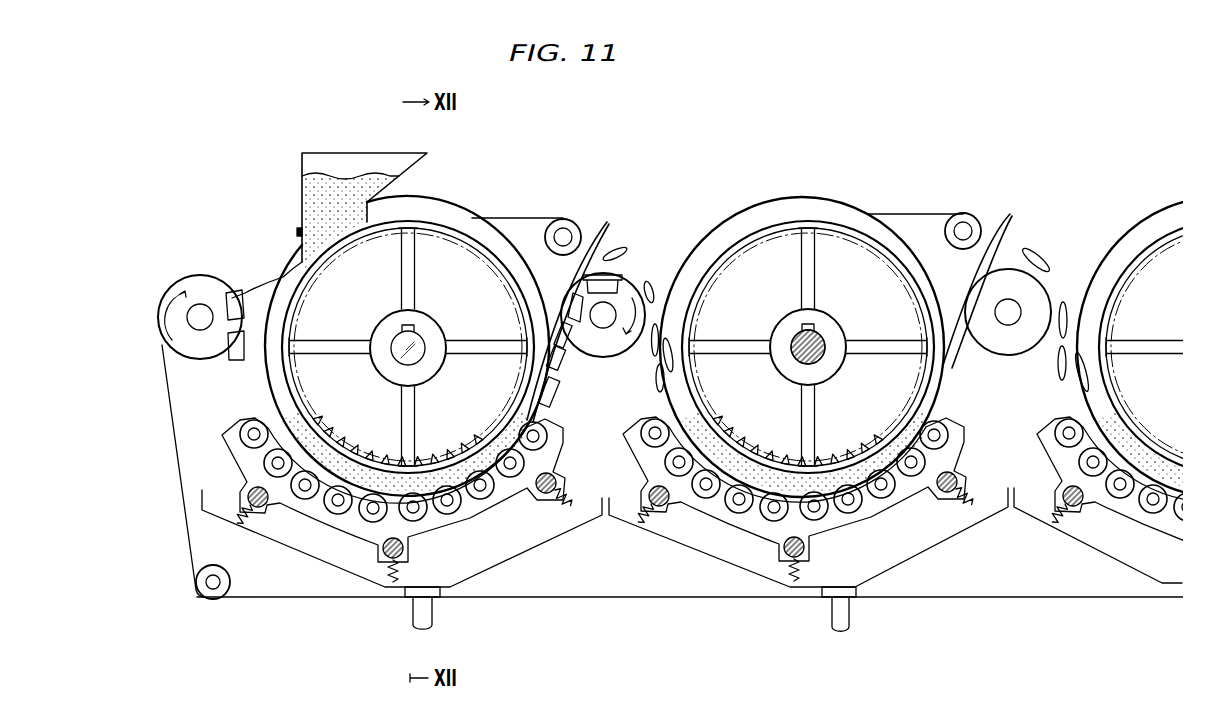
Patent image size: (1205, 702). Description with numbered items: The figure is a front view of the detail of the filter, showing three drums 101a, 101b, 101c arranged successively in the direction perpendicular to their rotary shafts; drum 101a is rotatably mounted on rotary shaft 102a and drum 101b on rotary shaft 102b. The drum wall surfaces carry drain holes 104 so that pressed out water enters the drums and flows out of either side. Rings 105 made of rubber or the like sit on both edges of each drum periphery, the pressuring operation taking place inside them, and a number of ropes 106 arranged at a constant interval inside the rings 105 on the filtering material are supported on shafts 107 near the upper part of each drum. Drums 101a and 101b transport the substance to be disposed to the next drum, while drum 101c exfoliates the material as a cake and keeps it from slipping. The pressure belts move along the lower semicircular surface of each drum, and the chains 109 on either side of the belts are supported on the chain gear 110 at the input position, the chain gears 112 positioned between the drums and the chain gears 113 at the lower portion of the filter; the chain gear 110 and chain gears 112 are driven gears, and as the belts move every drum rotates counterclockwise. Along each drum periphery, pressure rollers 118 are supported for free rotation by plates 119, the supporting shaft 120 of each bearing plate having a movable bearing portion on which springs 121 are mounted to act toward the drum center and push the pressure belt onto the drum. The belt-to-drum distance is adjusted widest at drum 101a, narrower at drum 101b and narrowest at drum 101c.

The drum 101a is at (462, 228).
The drum 101b is at (840, 222).
The drum 101c is at (1140, 245).
The rotary shaft 102a is at (392, 363).
The rotary shaft 102b is at (803, 357).
The drain holes 104 is at (449, 461).
The rings 105 is at (489, 228).
The ropes 106 is at (522, 217).
The shafts 107 is at (567, 220).
The chains 109 is at (595, 598).
The chain gear 110 is at (198, 276).
The chain gears 112 is at (626, 290).
The chain gears 113 is at (212, 598).
The pressure rollers 118 is at (480, 500).
The plates 119 is at (310, 514).
The supporting shaft 120 is at (252, 492).
The springs 121 is at (566, 506).